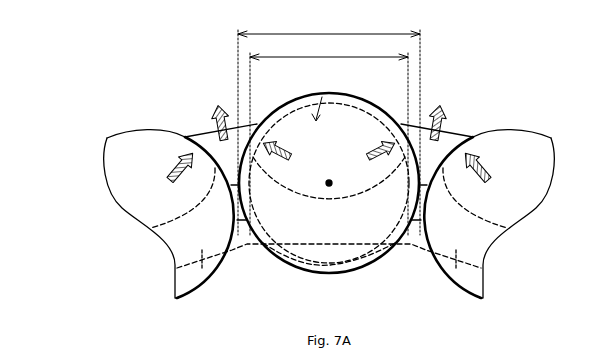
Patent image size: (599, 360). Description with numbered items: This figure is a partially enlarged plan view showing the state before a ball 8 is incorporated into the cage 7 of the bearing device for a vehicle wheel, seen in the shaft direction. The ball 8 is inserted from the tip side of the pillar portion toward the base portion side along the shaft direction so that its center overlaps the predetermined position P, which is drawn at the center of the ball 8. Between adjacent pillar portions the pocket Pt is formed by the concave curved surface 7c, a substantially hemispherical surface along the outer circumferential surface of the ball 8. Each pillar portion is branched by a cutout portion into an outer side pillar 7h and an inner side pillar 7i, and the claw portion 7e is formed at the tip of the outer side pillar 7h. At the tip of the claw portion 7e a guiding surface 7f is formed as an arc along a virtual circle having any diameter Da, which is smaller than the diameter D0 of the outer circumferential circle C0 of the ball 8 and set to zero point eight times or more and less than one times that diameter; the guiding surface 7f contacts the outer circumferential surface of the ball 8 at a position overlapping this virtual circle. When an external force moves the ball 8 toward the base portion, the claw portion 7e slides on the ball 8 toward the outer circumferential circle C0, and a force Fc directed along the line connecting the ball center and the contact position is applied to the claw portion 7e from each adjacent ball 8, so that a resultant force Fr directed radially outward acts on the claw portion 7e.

The cage 7 is at (66, 56).
The concave curved surface 7c is at (317, 240).
The claw portion 7e is at (185, 137).
The guiding surface 7f is at (182, 142).
The outer side pillar 7h is at (207, 133).
The inner side pillar 7i is at (245, 247).
The ball 8 is at (107, 138).
The diameter of the outer circumferential circle D0 is at (329, 125).
The diameter of the virtual circle Da is at (372, 284).
The outer circumferential circle C0 is at (283, 264).
The resultant force Fr is at (213, 100).
The force Fc is at (366, 159).
The pocket Pt is at (322, 95).
The predetermined position P is at (331, 188).